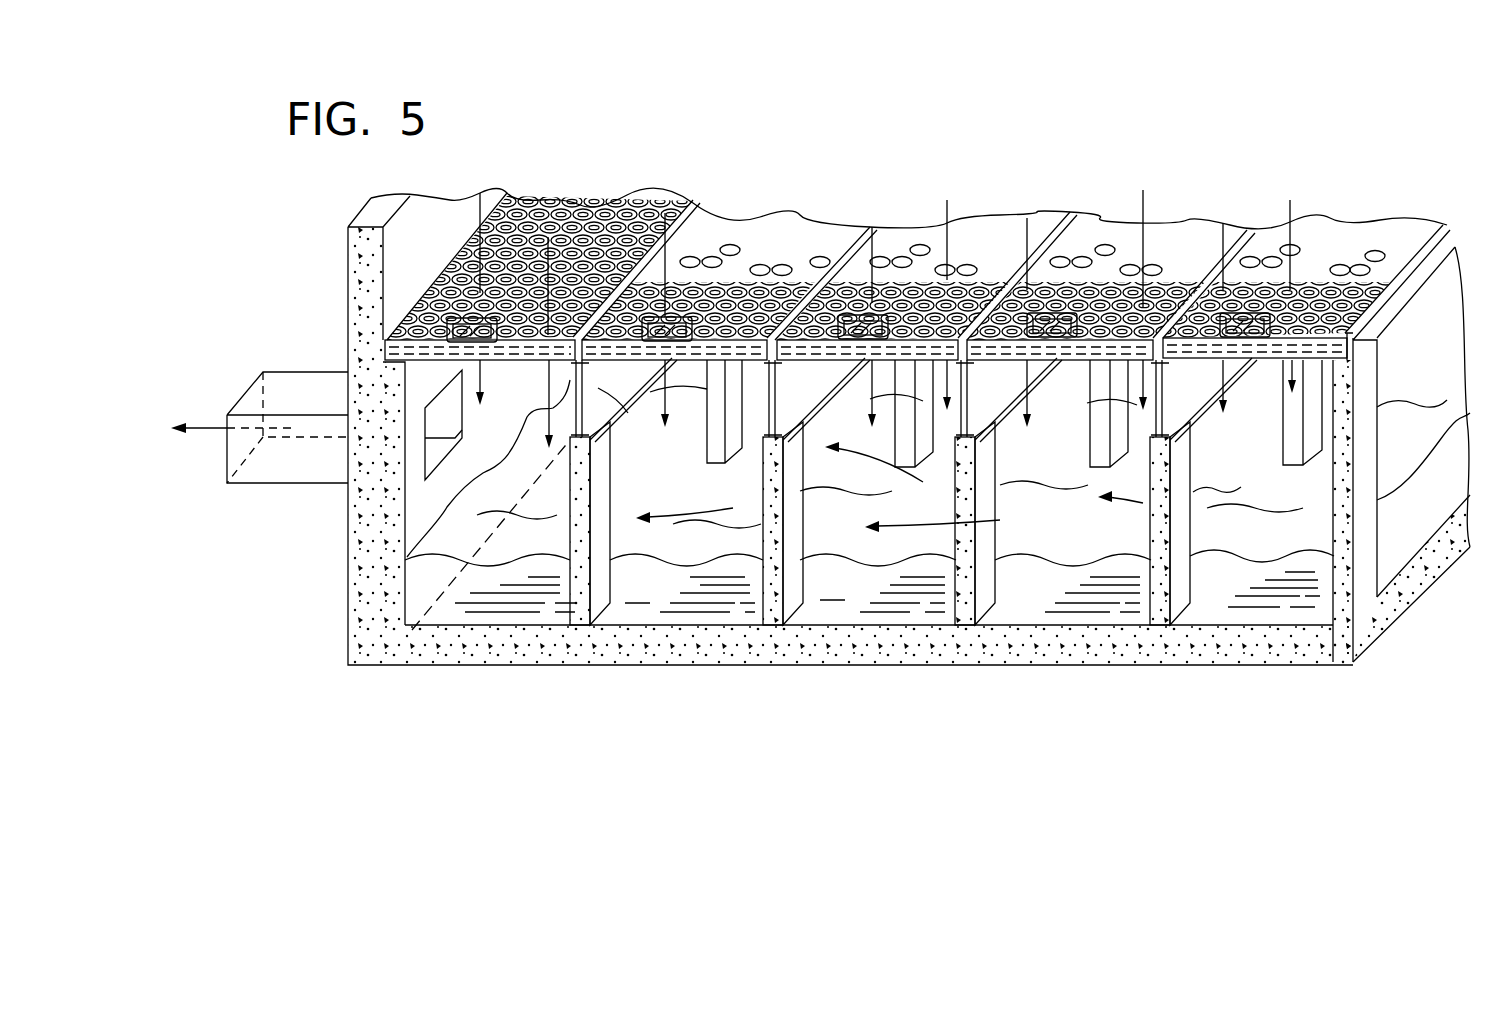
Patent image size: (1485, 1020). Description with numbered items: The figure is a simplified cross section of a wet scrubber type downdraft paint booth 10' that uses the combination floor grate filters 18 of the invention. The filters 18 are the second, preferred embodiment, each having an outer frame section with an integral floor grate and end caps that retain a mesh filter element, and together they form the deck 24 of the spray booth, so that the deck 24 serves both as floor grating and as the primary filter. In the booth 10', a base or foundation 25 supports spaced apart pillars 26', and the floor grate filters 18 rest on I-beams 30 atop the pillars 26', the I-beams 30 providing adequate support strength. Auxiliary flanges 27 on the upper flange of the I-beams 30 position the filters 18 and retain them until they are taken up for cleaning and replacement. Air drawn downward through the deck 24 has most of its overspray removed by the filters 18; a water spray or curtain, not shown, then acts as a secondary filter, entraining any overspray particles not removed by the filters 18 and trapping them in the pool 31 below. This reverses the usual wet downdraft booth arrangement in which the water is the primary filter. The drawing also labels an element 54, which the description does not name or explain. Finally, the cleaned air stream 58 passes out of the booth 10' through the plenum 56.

The wet scrubber type downdraft paint booth 10' is at (858, 426).
The combination floor grate filter 18 is at (568, 205).
The deck 24 is at (832, 197).
The base or foundation 25 is at (721, 657).
The pillars 26' is at (863, 540).
The auxiliary flanges 27 is at (1365, 338).
The I-beams 30 is at (973, 420).
The pool 31 is at (652, 603).
The opening 54 is at (573, 500).
The plenum 56 is at (303, 483).
The cleaned air stream 58 is at (208, 430).